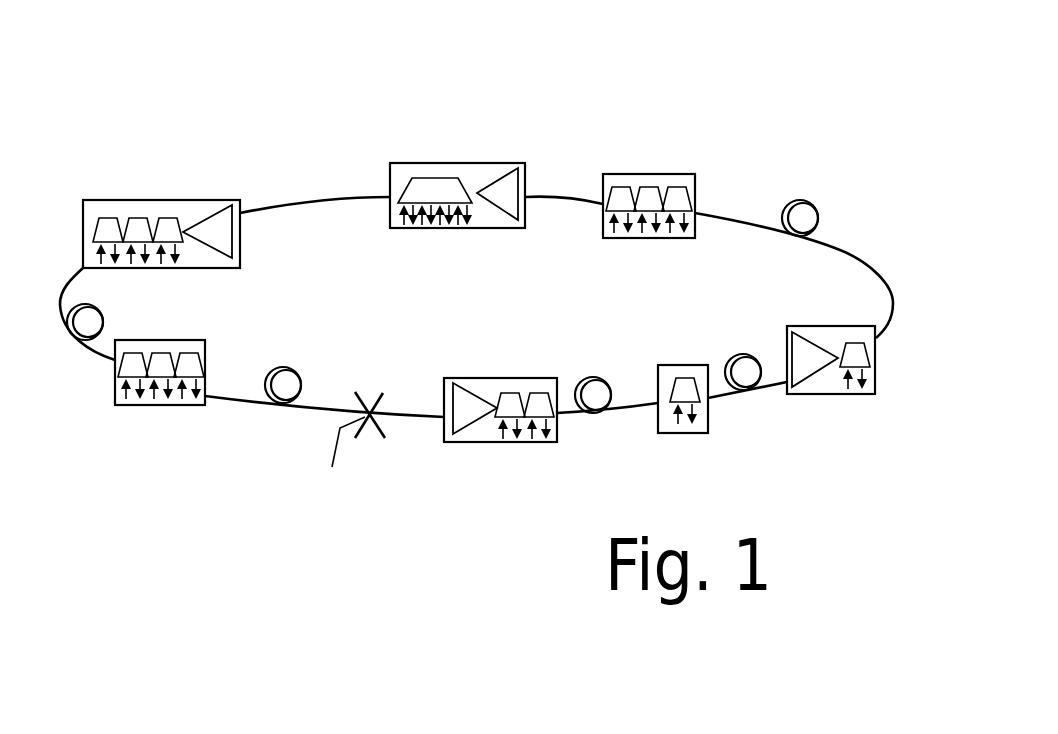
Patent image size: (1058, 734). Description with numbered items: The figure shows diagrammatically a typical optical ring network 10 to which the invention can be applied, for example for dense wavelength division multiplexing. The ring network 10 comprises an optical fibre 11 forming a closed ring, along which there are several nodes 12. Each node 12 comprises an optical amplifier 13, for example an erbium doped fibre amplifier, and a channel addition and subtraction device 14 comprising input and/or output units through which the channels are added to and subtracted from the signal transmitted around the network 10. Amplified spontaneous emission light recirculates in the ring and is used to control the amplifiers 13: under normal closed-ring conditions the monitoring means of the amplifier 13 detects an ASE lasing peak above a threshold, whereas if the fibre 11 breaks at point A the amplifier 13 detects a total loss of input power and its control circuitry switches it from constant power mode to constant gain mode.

The ring network 10 is at (700, 72).
The optical fibre 11 is at (340, 200).
The node 12 is at (197, 188).
The optical amplifier 13 is at (212, 237).
The channel addition and subtraction device 14 is at (132, 217).